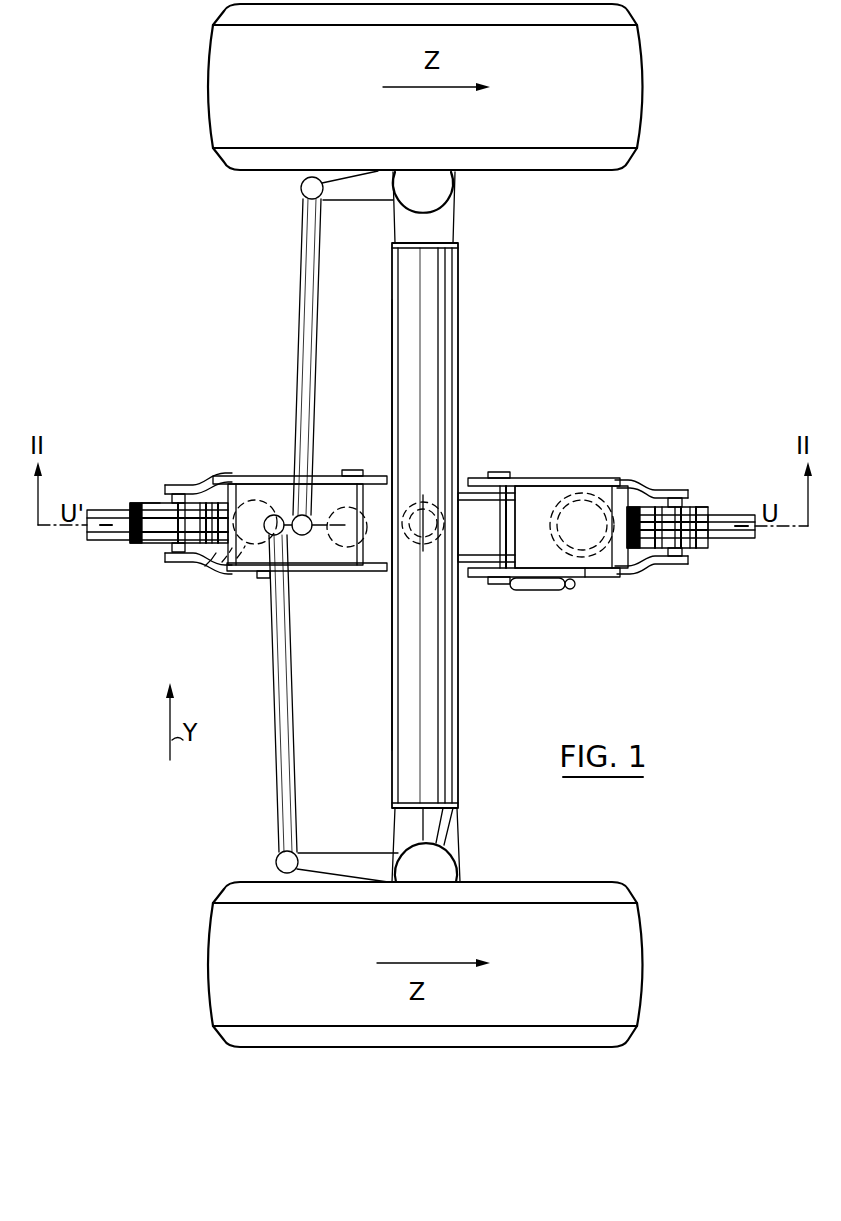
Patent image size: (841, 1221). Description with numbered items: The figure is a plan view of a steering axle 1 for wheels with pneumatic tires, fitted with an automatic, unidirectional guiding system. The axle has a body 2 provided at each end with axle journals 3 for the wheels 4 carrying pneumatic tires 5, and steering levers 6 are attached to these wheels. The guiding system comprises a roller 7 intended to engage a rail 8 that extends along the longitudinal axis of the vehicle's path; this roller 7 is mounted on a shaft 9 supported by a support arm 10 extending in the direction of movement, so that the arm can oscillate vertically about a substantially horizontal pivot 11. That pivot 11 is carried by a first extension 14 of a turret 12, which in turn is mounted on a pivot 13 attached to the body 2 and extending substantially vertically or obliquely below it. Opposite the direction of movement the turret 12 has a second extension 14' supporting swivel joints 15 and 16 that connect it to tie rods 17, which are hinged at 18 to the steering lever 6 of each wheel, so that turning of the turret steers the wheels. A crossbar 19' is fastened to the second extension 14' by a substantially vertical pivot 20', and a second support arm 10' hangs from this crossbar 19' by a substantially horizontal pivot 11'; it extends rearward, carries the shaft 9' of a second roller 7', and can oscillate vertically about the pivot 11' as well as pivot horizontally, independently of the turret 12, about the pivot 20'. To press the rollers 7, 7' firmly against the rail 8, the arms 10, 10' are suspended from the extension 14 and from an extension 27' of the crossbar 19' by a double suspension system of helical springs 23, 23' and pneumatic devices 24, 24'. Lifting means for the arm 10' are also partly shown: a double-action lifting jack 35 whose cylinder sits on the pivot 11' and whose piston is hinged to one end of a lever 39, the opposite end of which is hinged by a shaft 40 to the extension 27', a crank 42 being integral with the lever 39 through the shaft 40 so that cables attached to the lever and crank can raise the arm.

The steering axle 1 is at (452, 326).
The body 2 is at (445, 358).
The axle journal 3 is at (443, 190).
The wheel 4 is at (563, 162).
The pneumatic tire 5 is at (632, 106).
The steering lever 6 is at (377, 187).
The roller 7 is at (706, 461).
The second roller 7' is at (133, 457).
The rail 8 is at (112, 545).
The shaft 9 is at (667, 577).
The shaft 9' is at (179, 477).
The support arm 10 is at (658, 572).
The second support arm 10' is at (193, 482).
The pivot 11 is at (510, 483).
The pivot 11' is at (361, 460).
The turret 12 is at (440, 490).
The pivot 13 is at (435, 560).
The first extension 14 is at (543, 490).
The second extension 14' is at (295, 565).
The swivel joint 15 is at (323, 500).
The swivel joint 16 is at (272, 476).
The tie rod 17 is at (317, 357).
The hinge 18 is at (305, 191).
The crossbar 19' is at (350, 467).
The pivot 20' is at (344, 586).
The helical spring 23 is at (544, 607).
The helical spring 23' is at (182, 597).
The pneumatic device 24 is at (575, 625).
The pneumatic device 24' is at (208, 596).
The extension 27' is at (147, 595).
The lifting jack 35 is at (523, 583).
The lever 39 is at (250, 577).
The shaft 40 is at (200, 563).
The crank 42 is at (232, 476).